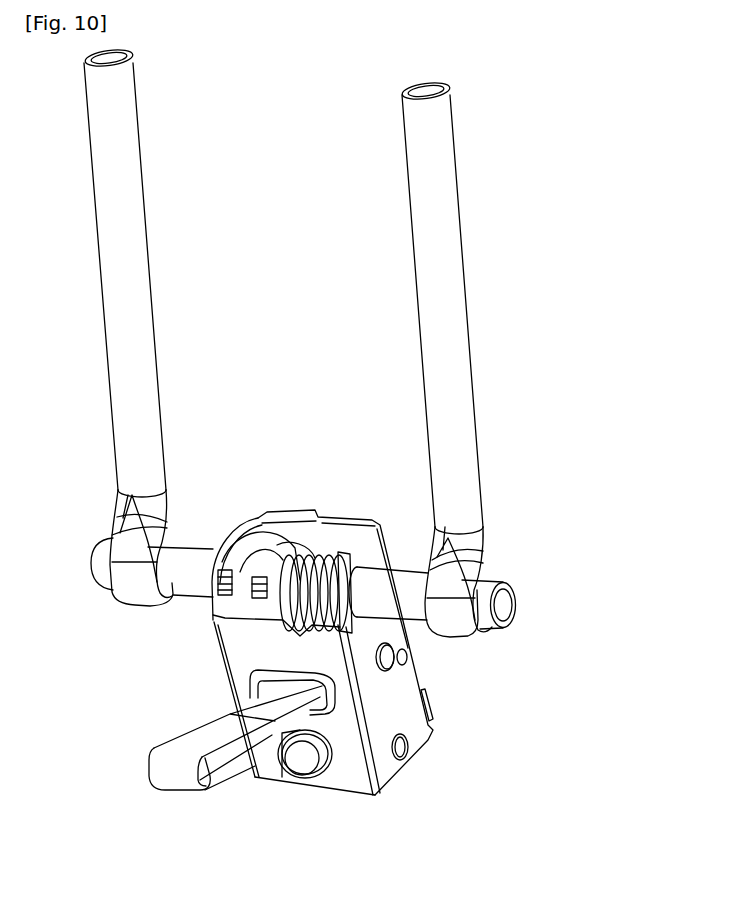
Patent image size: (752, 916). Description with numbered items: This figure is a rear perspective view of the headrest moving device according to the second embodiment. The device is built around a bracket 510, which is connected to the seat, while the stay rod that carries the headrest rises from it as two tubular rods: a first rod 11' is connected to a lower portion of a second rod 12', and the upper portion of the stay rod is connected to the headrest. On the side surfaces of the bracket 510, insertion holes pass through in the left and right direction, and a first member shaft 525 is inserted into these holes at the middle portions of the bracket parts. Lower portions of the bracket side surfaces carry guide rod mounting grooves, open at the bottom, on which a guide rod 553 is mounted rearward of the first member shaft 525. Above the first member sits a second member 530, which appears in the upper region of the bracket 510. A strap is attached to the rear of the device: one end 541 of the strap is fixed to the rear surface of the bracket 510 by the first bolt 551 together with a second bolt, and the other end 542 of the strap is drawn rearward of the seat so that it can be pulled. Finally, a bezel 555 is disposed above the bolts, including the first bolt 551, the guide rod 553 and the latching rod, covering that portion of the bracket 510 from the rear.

The first rod 11' is at (483, 600).
The second rod 12' is at (499, 307).
The bracket 510 is at (418, 722).
The first member shaft 525 is at (390, 655).
The second member 530 is at (252, 543).
The one end of the strap 541 is at (332, 782).
The other end of the strap 542 is at (163, 760).
The first bolt 551 is at (305, 763).
The guide rod 553 is at (403, 763).
The bezel 555 is at (260, 673).